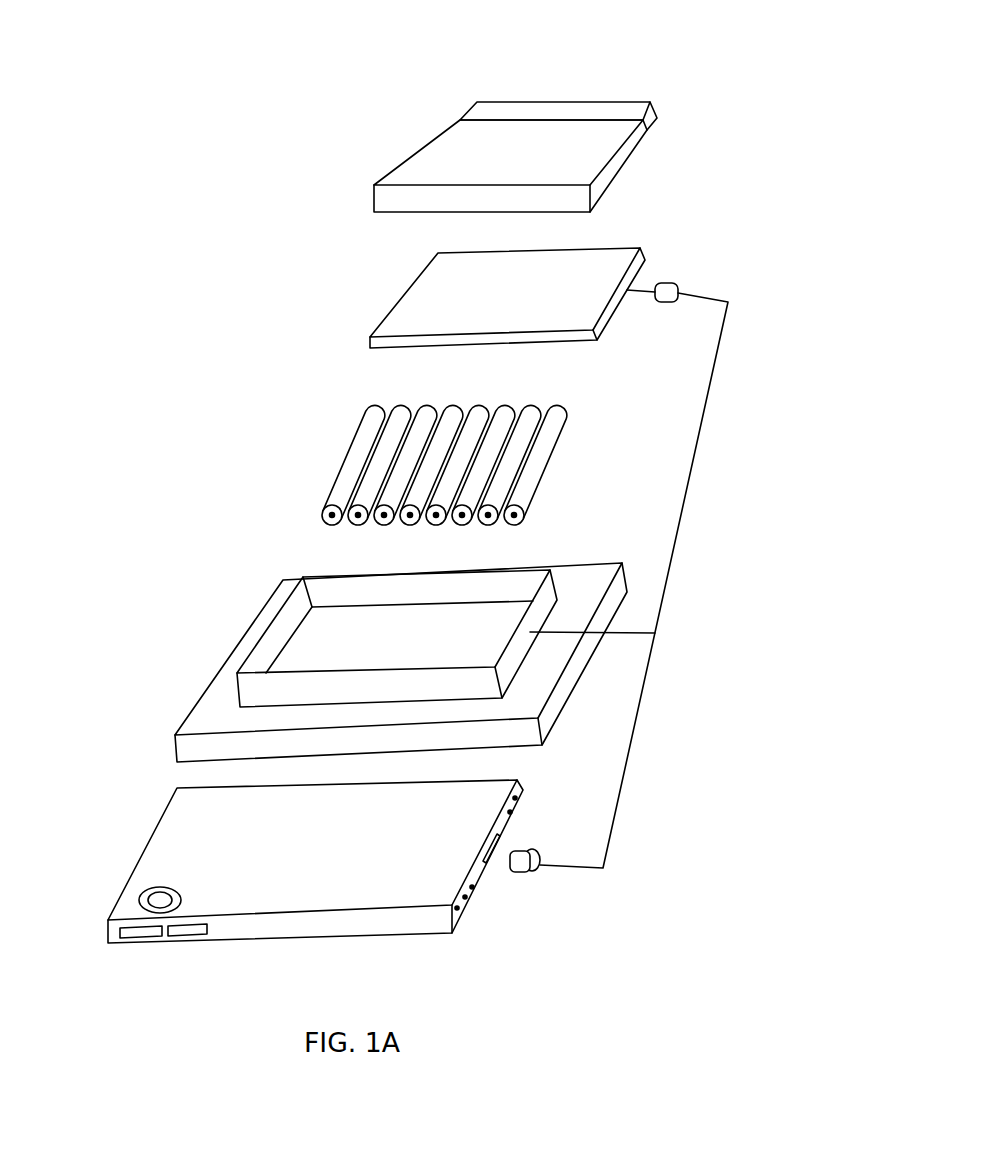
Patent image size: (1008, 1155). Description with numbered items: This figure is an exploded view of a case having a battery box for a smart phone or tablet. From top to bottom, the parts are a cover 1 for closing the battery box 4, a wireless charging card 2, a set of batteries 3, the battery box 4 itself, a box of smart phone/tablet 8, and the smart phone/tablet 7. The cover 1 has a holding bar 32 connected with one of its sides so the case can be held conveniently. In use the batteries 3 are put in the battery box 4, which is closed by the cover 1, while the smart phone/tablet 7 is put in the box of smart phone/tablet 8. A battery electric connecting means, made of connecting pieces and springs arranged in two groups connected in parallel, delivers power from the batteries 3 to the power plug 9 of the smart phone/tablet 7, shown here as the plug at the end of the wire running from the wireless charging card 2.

The cover 1 is at (583, 157).
The holding bar 32 is at (555, 112).
The wireless charging card 2 is at (567, 278).
The batteries 3 is at (488, 448).
The battery box 4 is at (363, 617).
The box of smart phone/tablet 8 is at (212, 718).
The smart phone/tablet 7 is at (203, 837).
The power plug 9 is at (522, 875).